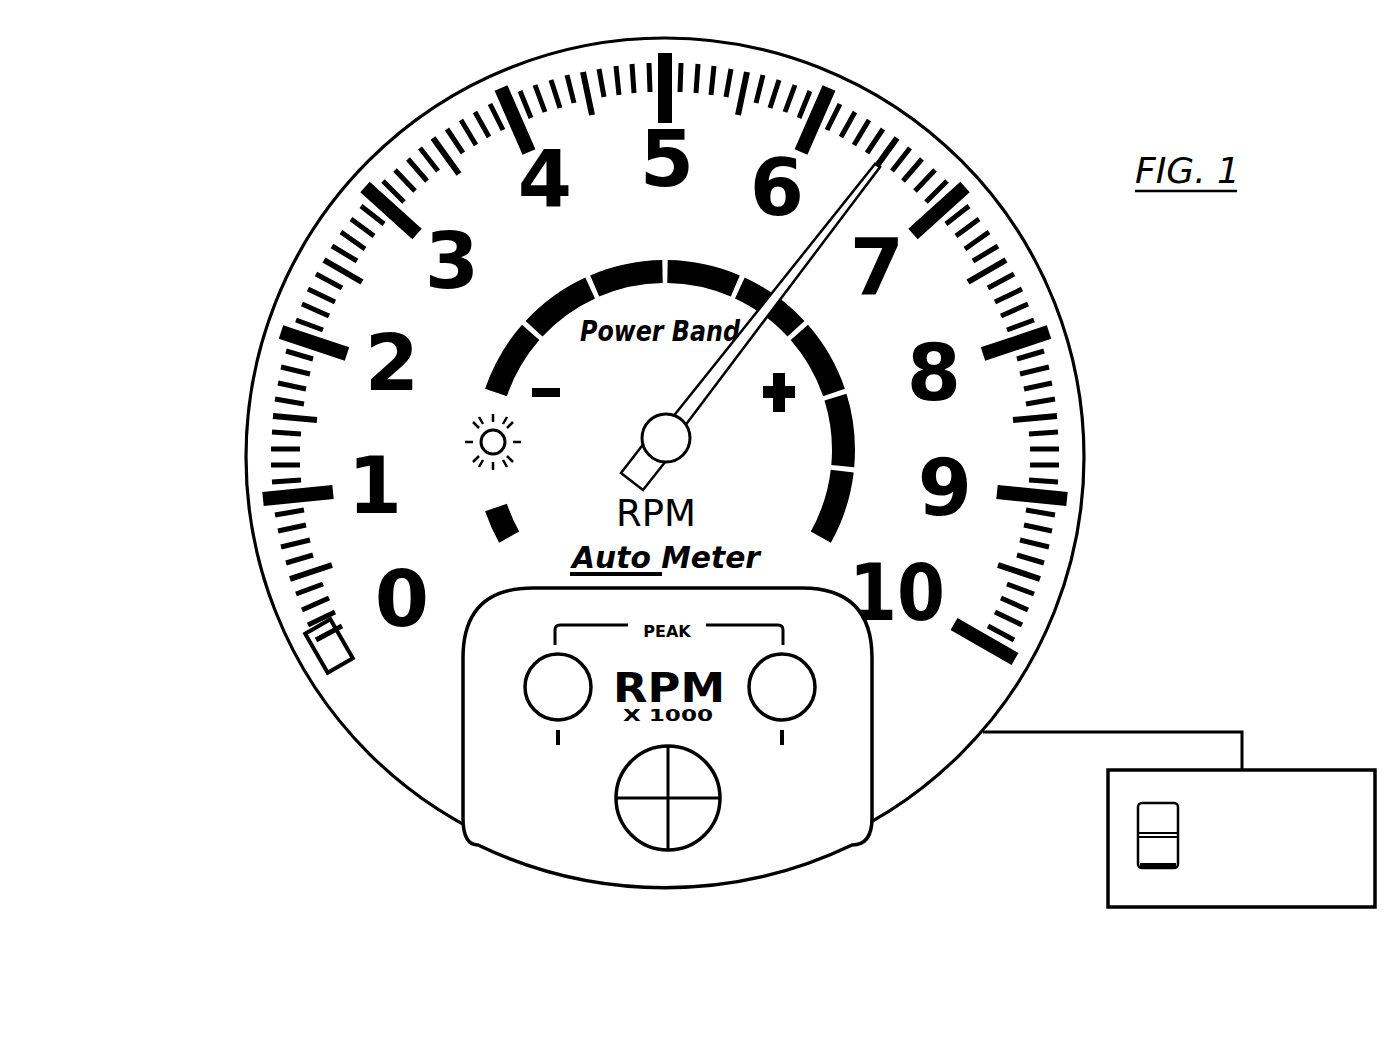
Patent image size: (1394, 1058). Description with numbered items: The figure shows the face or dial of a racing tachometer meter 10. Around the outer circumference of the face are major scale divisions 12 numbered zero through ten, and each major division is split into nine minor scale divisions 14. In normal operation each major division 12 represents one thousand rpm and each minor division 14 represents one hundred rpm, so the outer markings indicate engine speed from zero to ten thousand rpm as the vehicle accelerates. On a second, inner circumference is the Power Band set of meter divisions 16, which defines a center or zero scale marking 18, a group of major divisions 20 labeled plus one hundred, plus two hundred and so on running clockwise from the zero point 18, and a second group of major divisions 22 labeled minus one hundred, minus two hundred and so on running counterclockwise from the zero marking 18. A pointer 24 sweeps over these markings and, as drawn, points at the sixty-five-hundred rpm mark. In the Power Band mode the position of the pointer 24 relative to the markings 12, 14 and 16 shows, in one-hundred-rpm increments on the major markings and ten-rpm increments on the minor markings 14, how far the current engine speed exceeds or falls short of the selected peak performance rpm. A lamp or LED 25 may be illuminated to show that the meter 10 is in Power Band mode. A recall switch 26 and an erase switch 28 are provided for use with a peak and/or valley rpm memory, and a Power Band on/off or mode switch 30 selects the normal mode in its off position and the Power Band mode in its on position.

The meter 10 is at (620, 457).
The major scale divisions 12 is at (611, 363).
The minor scale divisions 14 is at (620, 351).
The Power Band set of meter divisions 16 is at (655, 427).
The zero scale marking 18 is at (641, 216).
The group of major divisions 20 is at (721, 245).
The second group of major divisions 22 is at (580, 255).
The pointer 24 is at (742, 327).
The lamp or LED 25 is at (474, 455).
The recall switch 26 is at (506, 712).
The erase switch 28 is at (836, 712).
The Power Band on/off switch 30 is at (1204, 838).